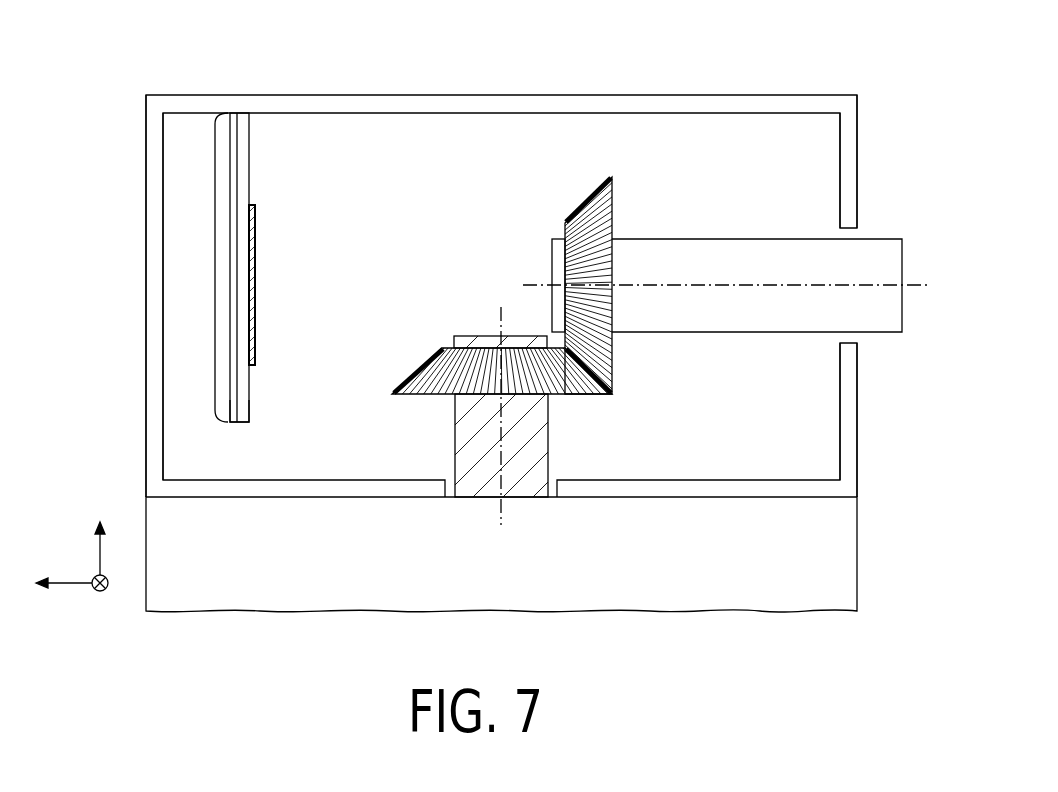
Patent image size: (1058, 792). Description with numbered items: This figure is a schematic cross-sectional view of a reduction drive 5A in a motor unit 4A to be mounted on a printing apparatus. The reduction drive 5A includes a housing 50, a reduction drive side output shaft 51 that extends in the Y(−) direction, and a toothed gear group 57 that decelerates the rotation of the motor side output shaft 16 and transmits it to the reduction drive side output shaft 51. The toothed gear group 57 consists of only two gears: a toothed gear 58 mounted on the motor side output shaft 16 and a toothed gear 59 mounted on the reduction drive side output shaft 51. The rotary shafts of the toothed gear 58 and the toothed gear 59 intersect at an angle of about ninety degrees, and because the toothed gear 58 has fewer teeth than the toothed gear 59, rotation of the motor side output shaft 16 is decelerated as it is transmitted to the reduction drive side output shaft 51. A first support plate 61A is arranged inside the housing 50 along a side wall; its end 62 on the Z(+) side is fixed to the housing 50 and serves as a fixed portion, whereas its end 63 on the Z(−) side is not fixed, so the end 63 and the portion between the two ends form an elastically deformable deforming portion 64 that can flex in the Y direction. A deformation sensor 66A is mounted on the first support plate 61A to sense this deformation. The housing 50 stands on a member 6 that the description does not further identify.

The motor unit 4A is at (848, 71).
The reduction drive 5A is at (855, 152).
The base 6 is at (855, 553).
The motor side output shaft 16 is at (455, 425).
The housing 50 is at (640, 102).
The reduction drive side output shaft 51 is at (722, 333).
The toothed gear group 57 is at (501, 224).
The toothed gear 58 is at (418, 372).
The toothed gear 59 is at (593, 201).
The first support plate 61A is at (164, 276).
The fixed portion 62 is at (245, 113).
The end of the first support plate 63 is at (246, 424).
The deforming portion 64 is at (213, 260).
The deformation sensor 66A is at (256, 300).